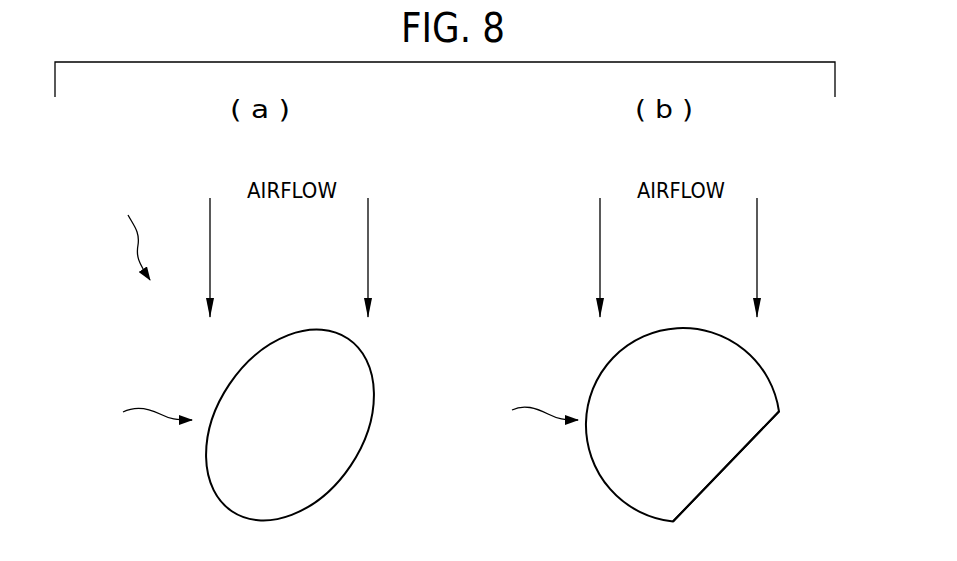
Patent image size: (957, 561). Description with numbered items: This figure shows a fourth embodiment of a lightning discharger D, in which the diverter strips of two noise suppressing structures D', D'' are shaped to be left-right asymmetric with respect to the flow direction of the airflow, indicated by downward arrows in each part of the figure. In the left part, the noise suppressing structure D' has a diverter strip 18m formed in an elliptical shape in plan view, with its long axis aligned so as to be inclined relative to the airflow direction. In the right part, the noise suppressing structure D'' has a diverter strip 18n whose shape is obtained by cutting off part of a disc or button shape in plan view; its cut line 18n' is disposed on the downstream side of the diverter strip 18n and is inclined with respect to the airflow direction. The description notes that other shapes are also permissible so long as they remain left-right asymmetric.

The diverter strip 18m is at (302, 350).
The diverter strip 18n is at (682, 390).
The cut line 18n' is at (746, 467).
The lightning discharger D is at (131, 232).
The noise suppressing structure D' is at (145, 412).
The noise suppressing structure D'' is at (530, 412).